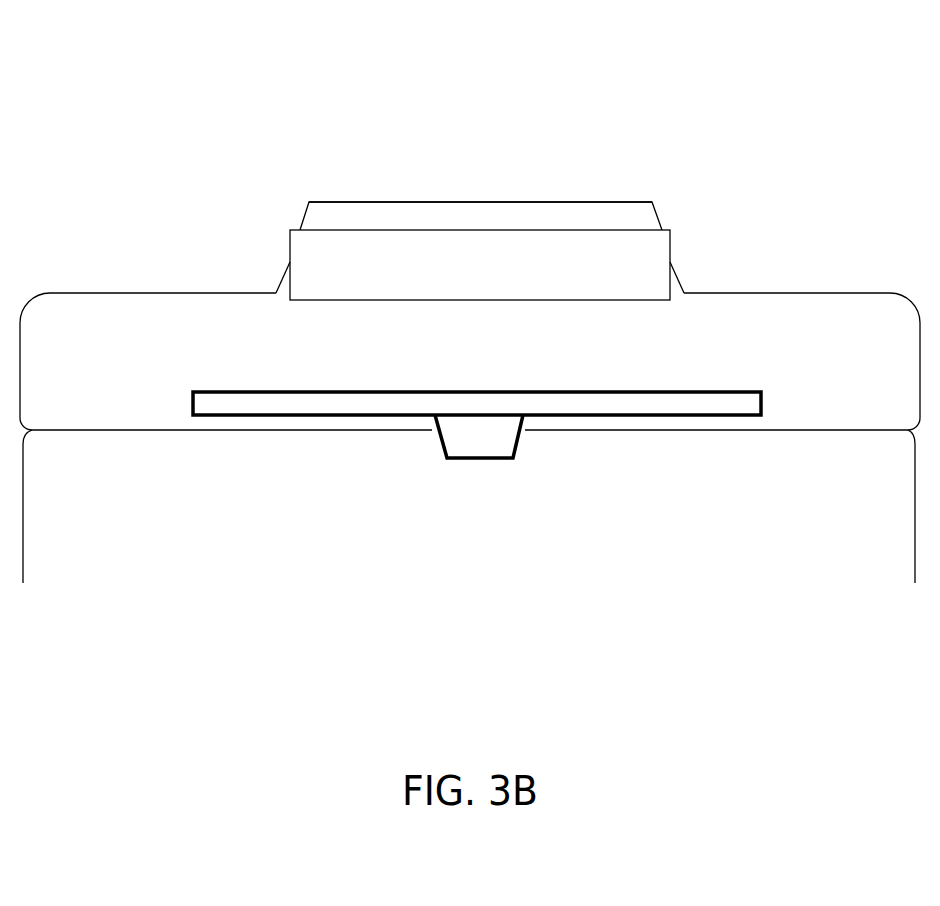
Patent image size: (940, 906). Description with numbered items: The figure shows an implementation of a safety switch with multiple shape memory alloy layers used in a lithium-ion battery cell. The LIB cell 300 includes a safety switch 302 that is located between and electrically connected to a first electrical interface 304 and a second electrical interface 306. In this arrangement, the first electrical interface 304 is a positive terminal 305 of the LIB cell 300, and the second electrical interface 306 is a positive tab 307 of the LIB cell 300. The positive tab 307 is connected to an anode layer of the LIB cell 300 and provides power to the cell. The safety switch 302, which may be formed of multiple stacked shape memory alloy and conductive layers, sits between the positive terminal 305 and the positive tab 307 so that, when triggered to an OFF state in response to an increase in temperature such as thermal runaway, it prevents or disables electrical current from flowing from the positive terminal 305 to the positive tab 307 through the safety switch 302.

The LIB cell 300 is at (503, 68).
The safety switch 302 is at (672, 243).
The first electrical interface 304 is at (400, 202).
The positive terminal 305 is at (512, 202).
The second electrical interface 306 is at (757, 390).
The positive tab 307 is at (665, 390).